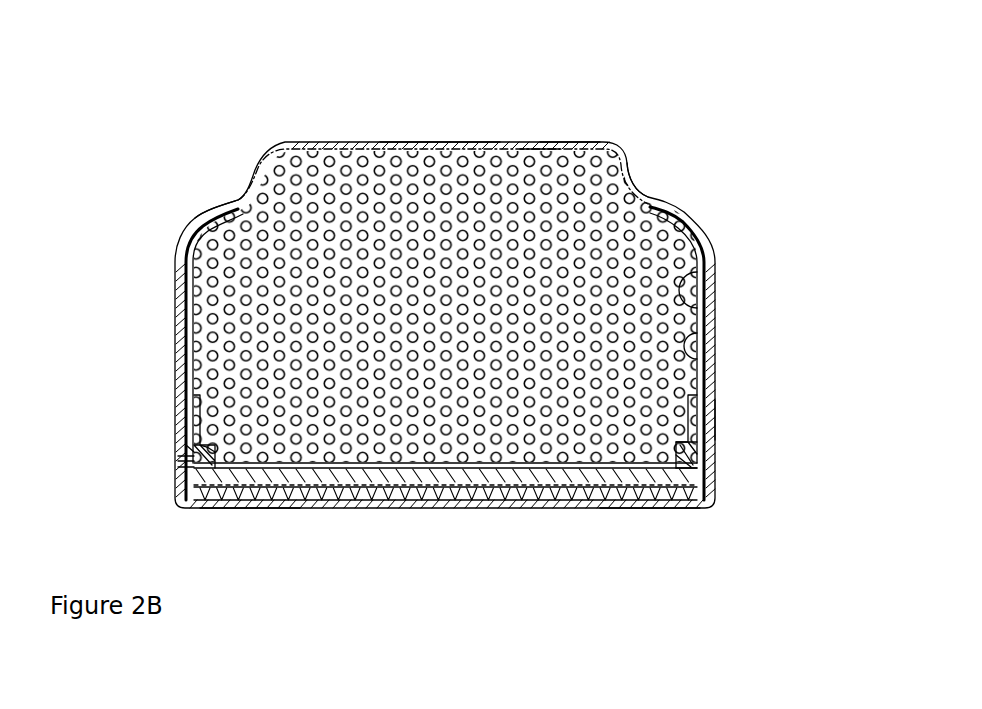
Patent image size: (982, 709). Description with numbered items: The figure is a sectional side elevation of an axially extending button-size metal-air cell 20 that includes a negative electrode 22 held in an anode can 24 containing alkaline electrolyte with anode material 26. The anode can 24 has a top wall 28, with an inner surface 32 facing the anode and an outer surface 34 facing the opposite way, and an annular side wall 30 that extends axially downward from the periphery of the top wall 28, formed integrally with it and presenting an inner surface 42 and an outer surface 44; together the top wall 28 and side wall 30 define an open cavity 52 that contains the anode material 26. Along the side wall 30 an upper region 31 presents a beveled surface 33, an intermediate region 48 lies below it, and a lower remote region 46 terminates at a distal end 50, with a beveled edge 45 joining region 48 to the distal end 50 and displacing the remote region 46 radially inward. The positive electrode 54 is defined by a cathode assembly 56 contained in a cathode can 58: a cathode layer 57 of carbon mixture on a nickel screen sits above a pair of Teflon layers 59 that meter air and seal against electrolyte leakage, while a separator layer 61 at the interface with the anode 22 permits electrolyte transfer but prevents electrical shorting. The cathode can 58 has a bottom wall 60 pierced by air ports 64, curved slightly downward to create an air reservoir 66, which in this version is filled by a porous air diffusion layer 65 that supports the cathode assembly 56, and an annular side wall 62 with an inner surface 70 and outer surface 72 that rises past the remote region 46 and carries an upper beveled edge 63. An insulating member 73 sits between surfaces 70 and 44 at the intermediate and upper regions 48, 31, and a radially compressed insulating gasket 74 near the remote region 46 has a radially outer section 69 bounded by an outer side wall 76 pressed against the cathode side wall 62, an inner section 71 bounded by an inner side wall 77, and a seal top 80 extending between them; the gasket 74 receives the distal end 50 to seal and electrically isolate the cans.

The metal-air cell 20 is at (676, 139).
The negative electrode 22 is at (291, 138).
The anode can 24 is at (411, 140).
The anode material 26 is at (483, 215).
The top wall 28 is at (334, 142).
The annular side wall 30 is at (712, 262).
The upper region 31 is at (634, 185).
The inner surface 32 is at (558, 153).
The beveled surface 33 is at (639, 185).
The outer surface 34 is at (538, 138).
The inner surface 42 is at (680, 357).
The outer surface 44 is at (712, 330).
The beveled edge 45 is at (715, 403).
The remote region 46 is at (717, 422).
The intermediate region 48 is at (712, 314).
The distal end 50 is at (714, 466).
The open cavity 52 is at (464, 142).
The positive electrode 54 is at (255, 511).
The cathode assembly 56 is at (377, 490).
The cathode layer 57 is at (497, 478).
The cathode can 58 is at (520, 510).
The Teflon layers 59 is at (410, 490).
The bottom wall 60 is at (655, 508).
The separator layer 61 is at (293, 475).
The annular side wall 62 is at (180, 393).
The upper beveled edge 63 is at (197, 208).
The air ports 64 is at (560, 507).
The second boundary line 65 is at (347, 510).
The air reservoir 66 is at (440, 512).
The radially outer section 69 is at (177, 458).
The inner surface 70 is at (177, 357).
The inner section 71 is at (190, 470).
The outer surface 72 is at (178, 322).
The insulating member 73 is at (228, 200).
The insulating gasket 74 is at (178, 460).
The outer side wall 76 is at (177, 468).
The inner side wall 77 is at (222, 472).
The seal top 80 is at (177, 450).